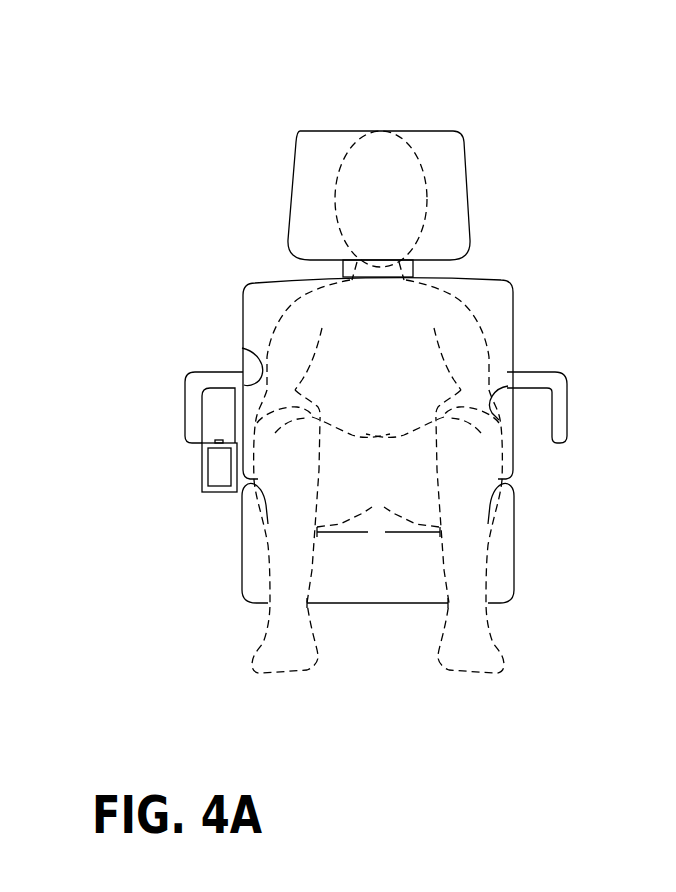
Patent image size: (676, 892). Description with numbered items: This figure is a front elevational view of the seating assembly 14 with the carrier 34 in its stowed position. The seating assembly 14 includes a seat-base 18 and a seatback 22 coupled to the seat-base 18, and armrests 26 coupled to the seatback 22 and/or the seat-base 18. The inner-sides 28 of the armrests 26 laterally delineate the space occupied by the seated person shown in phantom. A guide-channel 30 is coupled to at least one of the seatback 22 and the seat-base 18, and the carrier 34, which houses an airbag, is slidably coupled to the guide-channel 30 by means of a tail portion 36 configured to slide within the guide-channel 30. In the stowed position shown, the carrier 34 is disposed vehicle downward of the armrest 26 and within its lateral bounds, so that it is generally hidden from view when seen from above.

The seating assembly 14 is at (266, 138).
The seat-base 18 is at (380, 578).
The seatback 22 is at (270, 298).
The armrest 26 is at (203, 375).
The inner-sides 28 is at (242, 348).
The guide-channel 30 is at (220, 492).
The carrier 34 is at (215, 420).
The tail portion 36 is at (217, 465).